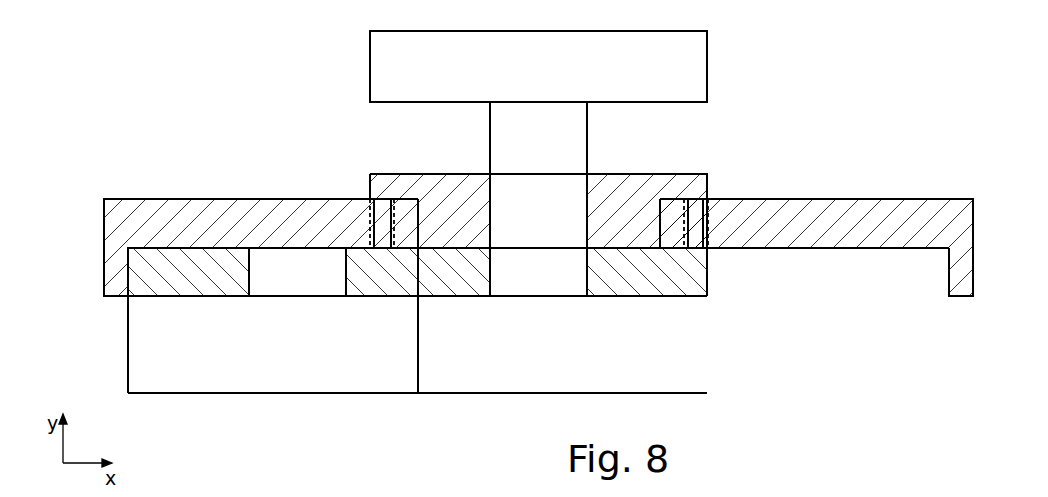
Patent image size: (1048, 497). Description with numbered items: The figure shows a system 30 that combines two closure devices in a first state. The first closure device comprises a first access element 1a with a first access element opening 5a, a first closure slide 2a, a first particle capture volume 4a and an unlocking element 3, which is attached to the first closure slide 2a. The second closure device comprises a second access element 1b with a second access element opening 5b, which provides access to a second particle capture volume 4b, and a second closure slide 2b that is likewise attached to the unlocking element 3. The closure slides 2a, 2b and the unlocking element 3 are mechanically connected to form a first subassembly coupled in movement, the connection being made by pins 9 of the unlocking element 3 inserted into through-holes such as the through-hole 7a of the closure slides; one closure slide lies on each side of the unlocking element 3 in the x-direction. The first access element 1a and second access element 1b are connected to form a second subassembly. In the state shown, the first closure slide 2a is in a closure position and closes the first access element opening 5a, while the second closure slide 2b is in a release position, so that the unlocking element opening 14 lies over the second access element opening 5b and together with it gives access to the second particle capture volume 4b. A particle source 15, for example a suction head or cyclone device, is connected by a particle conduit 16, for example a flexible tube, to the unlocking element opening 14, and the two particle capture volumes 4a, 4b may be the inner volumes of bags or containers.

The system 30 is at (213, 118).
The particle source 15 is at (708, 58).
The particle conduit 16 is at (588, 150).
The unlocking element 3 is at (708, 186).
The unlocking element opening 14 is at (510, 198).
The first closure slide 2a is at (104, 227).
The second closure slide 2b is at (975, 213).
The through-hole 7a is at (372, 225).
The pin 9 is at (381, 215).
The first access element 1a is at (172, 297).
The second access element 1b is at (709, 278).
The first access element opening 5a is at (290, 284).
The second access element opening 5b is at (525, 283).
The first particle capture volume 4a is at (280, 379).
The second particle capture volume 4b is at (693, 373).